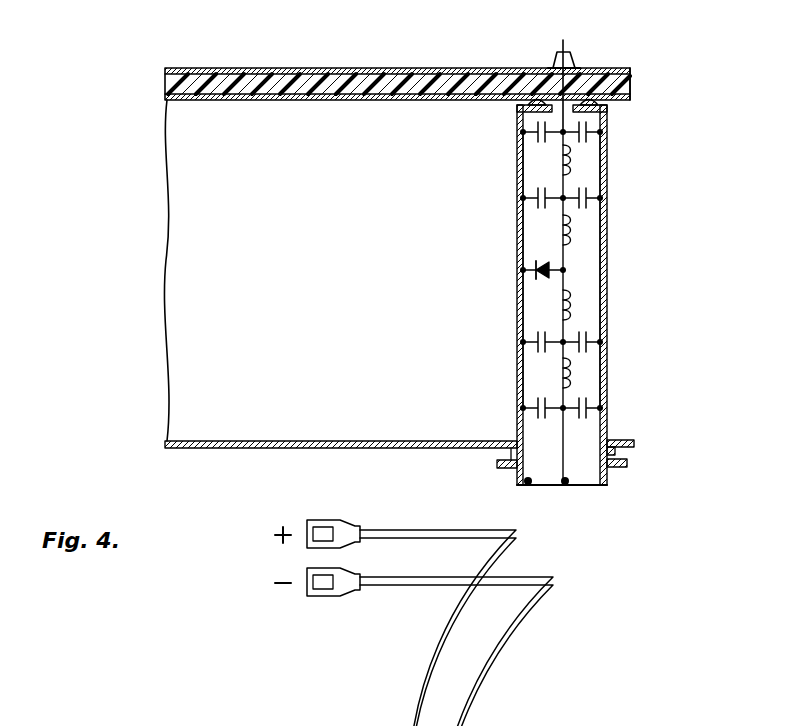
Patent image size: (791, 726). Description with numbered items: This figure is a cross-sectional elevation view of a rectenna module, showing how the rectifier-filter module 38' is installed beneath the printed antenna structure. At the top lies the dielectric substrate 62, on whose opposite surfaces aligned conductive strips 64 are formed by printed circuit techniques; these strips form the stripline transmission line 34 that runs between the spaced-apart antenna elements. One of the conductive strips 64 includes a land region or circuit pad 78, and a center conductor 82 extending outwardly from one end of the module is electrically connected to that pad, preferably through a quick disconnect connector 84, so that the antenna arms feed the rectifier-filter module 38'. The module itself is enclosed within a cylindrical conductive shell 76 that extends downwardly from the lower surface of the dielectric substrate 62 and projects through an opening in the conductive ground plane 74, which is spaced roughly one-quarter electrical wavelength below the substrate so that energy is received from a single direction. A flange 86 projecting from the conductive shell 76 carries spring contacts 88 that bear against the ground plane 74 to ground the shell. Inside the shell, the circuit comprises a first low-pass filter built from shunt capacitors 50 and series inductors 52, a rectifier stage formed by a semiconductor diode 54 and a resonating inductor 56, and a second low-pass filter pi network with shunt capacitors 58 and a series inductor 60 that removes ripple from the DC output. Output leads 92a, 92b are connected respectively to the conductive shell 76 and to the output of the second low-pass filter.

The transmission line 34 is at (197, 108).
The rectifier-filter module 38' is at (602, 308).
The capacitor 50 is at (530, 126).
The inductor 52 is at (557, 160).
The semiconductor diode 54 is at (525, 272).
The inductor 56 is at (555, 310).
The shunt capacitor 58 is at (595, 338).
The series inductor 60 is at (568, 378).
The dielectric substrate 62 is at (165, 82).
The conductive strip 64 is at (366, 68).
The conductive ground plane 74 is at (283, 440).
The cylindrical conductive shell 76 is at (606, 307).
The circuit pad 78 is at (580, 68).
The center conductor 82 is at (632, 78).
The quick disconnect connector 84 is at (563, 55).
The flange 86 is at (620, 467).
The spring contacts 88 is at (622, 452).
The output lead 92a is at (406, 530).
The output lead 92b is at (408, 585).